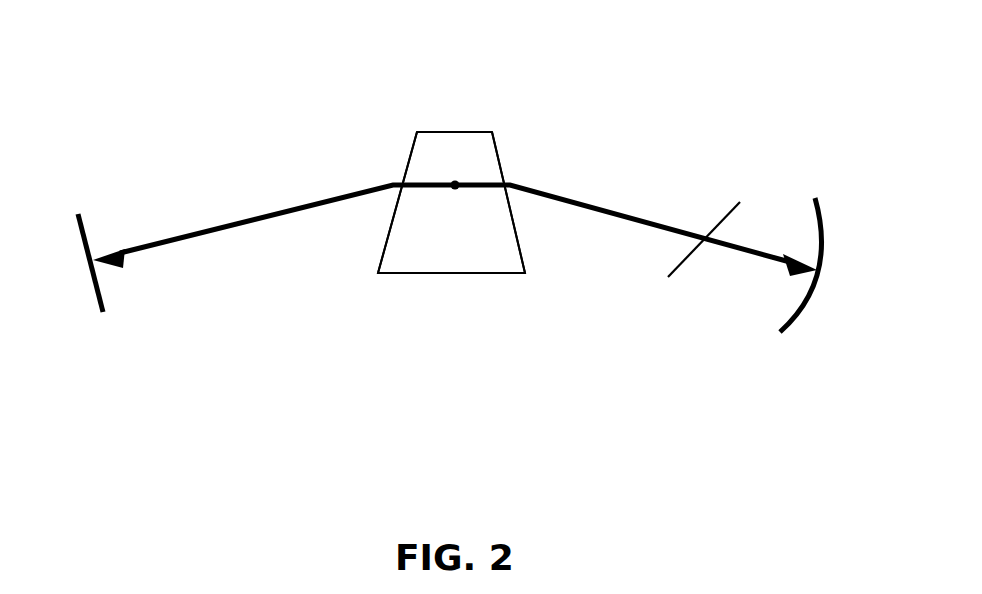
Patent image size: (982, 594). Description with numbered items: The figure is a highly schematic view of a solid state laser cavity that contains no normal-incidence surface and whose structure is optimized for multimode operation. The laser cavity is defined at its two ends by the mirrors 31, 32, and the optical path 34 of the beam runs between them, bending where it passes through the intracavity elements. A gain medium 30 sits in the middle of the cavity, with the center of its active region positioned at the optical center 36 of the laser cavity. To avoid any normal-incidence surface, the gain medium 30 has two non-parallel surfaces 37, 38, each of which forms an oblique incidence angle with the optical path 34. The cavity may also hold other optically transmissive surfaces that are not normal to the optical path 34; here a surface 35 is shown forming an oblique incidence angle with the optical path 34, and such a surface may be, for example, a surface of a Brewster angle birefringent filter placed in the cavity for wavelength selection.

The gain medium 30 is at (455, 273).
The mirror 31 is at (100, 305).
The mirror 32 is at (780, 330).
The optical path 34 is at (585, 190).
The surface 35 is at (677, 273).
The optical center 36 is at (460, 168).
The surface 37 is at (384, 249).
The surface 38 is at (521, 250).